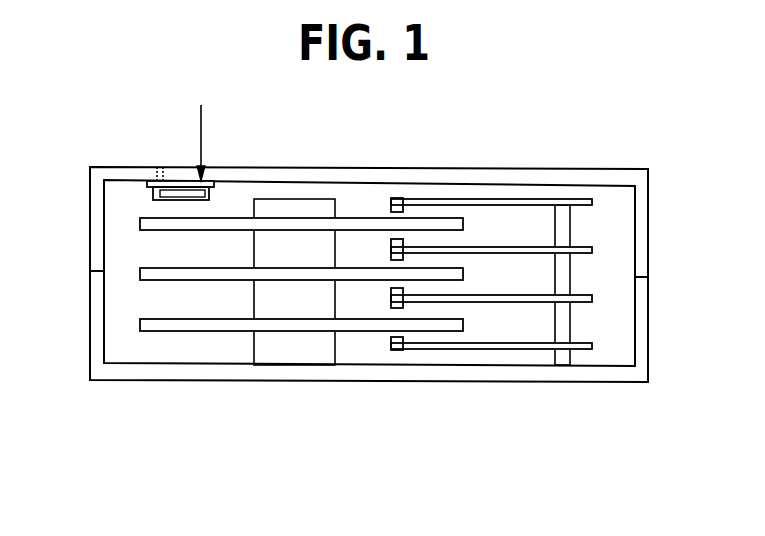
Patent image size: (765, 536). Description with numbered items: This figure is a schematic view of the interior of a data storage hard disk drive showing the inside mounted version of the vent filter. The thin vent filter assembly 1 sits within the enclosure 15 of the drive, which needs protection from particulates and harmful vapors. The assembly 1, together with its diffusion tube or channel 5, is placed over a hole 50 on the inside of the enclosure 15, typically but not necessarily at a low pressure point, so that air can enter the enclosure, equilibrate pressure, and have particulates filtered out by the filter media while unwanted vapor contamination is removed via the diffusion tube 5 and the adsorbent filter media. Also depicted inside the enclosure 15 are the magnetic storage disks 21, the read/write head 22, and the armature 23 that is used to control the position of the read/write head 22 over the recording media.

The vent filter assembly 1 is at (201, 129).
The diffusion tube 5 is at (222, 168).
The enclosure 15 is at (223, 372).
The magnetic storage disks 21 is at (359, 225).
The read/write head 22 is at (397, 202).
The armature 23 is at (535, 201).
The hole 50 is at (160, 167).